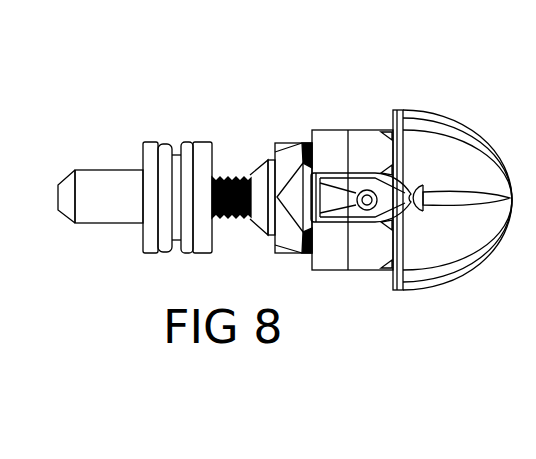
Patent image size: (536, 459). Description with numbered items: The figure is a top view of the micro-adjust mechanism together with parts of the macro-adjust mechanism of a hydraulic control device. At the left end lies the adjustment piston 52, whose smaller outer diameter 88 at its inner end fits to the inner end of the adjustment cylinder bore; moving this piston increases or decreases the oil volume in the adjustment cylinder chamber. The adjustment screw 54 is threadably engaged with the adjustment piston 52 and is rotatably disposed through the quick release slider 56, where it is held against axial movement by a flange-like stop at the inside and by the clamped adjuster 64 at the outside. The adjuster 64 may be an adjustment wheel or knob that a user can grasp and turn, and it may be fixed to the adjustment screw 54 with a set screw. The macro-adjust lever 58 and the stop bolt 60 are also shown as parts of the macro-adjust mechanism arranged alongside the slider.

The adjustment piston 52 is at (126, 192).
The adjustment screw 54 is at (238, 178).
The quick release slider 56 is at (294, 157).
The macro-adjust lever 58 is at (375, 247).
The stop bolt 60 is at (333, 153).
The adjuster 64 is at (440, 160).
The smaller outer diameter 88 is at (90, 217).